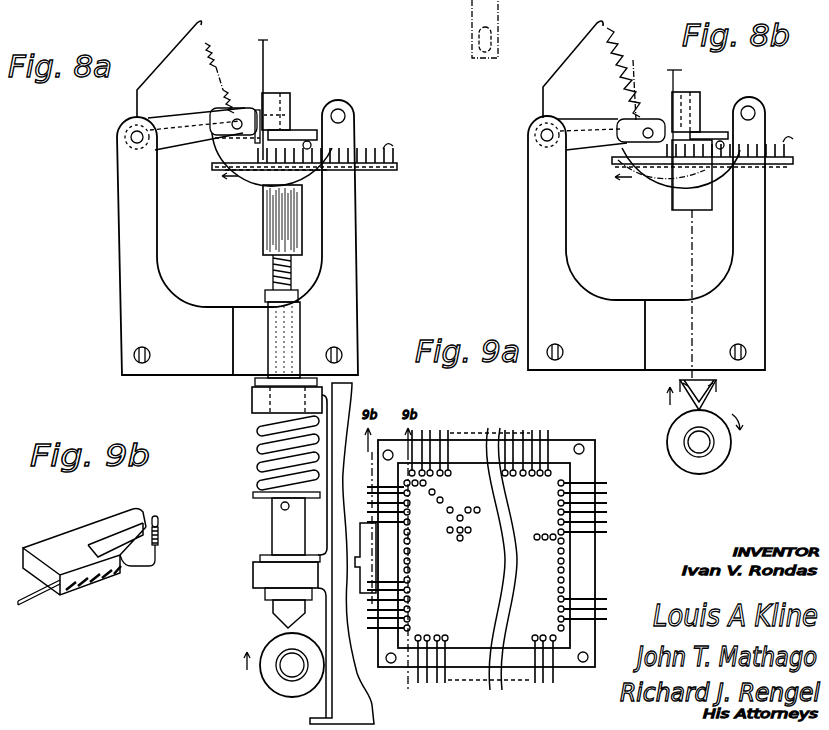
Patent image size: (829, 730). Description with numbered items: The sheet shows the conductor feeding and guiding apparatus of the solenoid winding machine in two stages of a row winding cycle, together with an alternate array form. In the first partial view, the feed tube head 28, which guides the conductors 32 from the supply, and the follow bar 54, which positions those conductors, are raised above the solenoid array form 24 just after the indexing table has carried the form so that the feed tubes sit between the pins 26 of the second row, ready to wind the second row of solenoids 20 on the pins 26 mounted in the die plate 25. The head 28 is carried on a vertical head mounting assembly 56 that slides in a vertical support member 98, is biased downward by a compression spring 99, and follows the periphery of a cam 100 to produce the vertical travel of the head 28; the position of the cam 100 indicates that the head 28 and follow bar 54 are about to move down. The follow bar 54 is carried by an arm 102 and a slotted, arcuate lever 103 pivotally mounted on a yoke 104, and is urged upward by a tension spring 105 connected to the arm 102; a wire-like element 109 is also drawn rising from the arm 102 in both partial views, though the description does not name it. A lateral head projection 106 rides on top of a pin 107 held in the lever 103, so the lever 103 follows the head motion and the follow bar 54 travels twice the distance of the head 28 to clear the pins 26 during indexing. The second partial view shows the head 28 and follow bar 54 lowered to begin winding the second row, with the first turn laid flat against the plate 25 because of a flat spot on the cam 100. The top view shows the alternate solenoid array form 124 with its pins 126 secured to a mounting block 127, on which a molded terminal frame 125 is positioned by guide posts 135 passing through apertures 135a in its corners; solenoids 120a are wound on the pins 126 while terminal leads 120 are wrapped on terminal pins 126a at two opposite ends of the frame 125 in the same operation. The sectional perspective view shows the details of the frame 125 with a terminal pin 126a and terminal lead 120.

In FIG. 8A, the solenoid 20 is at (249, 165).
In FIG. 8B, the solenoid 20 is at (668, 135).
In FIG. 8A, the solenoid array form 24 is at (385, 140).
In FIG. 8B, the solenoid array form 24 is at (774, 172).
In FIG. 8A, the die plate 25 is at (375, 171).
In FIG. 8A, the pin 26 is at (396, 151).
In FIG. 8B, the pin 26 is at (790, 145).
In FIG. 8A, the conductor guide or feed tube head 28 is at (293, 86).
In FIG. 8B, the conductor guide or feed tube head 28 is at (670, 95).
In FIG. 8A, the conductor 32 is at (266, 44).
In FIG. 8A, the follow bar 54 is at (257, 112).
In FIG. 8A, the head mounting assembly 56 is at (262, 232).
In FIG. 8A, the vertical support member 98 is at (335, 505).
In FIG. 8A, the compression spring 99 is at (262, 446).
In FIG. 8A, the cam 100 is at (288, 694).
In FIG. 8B, the cam 100 is at (716, 461).
In FIG. 8A, the arm 102 is at (170, 118).
In FIG. 8B, the arm 102 is at (600, 112).
In FIG. 8A, the lever 103 is at (250, 176).
In FIG. 8B, the lever 103 is at (625, 152).
In FIG. 8A, the yoke 104 is at (358, 270).
In FIG. 8B, the yoke 104 is at (758, 301).
In FIG. 8A, the tension spring 105 is at (216, 63).
In FIG. 8B, the tension spring 105 is at (614, 48).
In FIG. 8A, the lateral head projection 106 is at (296, 128).
In FIG. 8B, the lateral head projection 106 is at (712, 132).
In FIG. 8B, the pin 107 is at (734, 150).
In FIG. 8A, the wire 109 is at (160, 52).
In FIG. 8B, the wire 109 is at (570, 45).
In FIG. 9A, the terminal lead 120 is at (405, 482).
In FIG. 9B, the terminal lead 120 is at (162, 548).
In FIG. 9A, the solenoid 120a is at (465, 540).
In FIG. 9A, the alternate solenoid array form 124 is at (484, 555).
In FIG. 9A, the terminal frame 125 is at (523, 440).
In FIG. 9B, the terminal frame 125 is at (72, 570).
In FIG. 9A, the pin 126 is at (463, 520).
In FIG. 9B, the terminal pin 126a is at (160, 528).
In FIG. 9A, the mounting block 127 is at (372, 610).
In FIG. 9A, the guide post 135 is at (389, 450).
In FIG. 9A, the aperture 135a is at (580, 447).